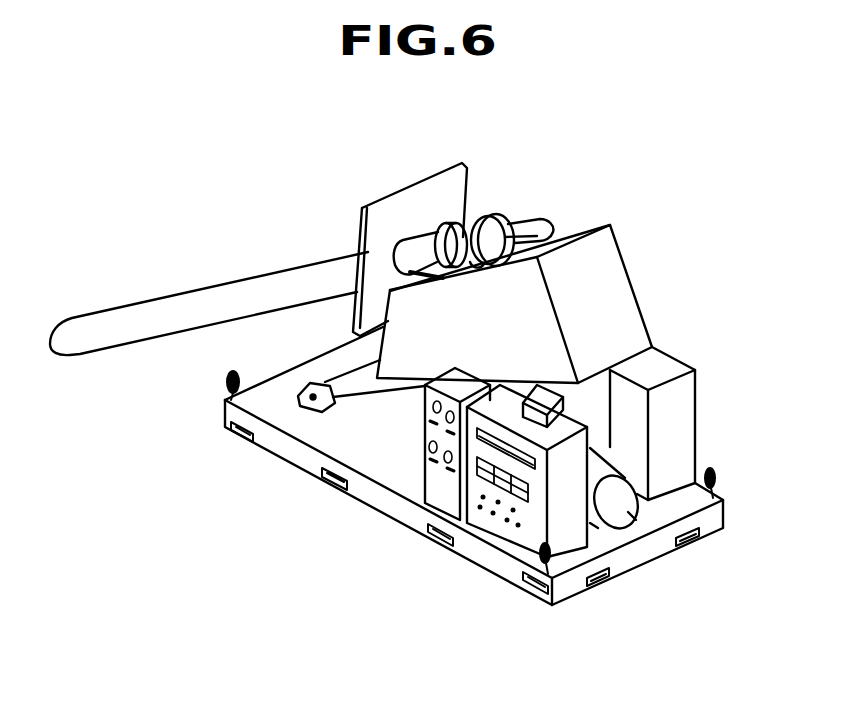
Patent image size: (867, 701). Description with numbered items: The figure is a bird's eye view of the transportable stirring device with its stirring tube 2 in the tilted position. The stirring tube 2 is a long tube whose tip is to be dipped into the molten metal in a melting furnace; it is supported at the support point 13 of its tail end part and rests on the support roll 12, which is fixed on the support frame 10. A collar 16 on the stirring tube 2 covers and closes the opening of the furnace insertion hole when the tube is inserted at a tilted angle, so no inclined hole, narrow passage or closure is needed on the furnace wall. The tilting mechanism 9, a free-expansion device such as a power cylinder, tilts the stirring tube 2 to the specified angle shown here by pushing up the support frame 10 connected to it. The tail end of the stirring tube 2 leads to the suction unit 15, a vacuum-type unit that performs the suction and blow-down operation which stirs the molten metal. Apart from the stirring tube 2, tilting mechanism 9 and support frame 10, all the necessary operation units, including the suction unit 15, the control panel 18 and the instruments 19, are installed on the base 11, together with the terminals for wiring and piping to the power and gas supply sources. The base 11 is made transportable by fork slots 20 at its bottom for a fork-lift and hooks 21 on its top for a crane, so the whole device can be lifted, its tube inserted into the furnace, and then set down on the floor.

The stirring tube 2 is at (138, 301).
The tilting mechanism 9 is at (627, 498).
The support frame 10 is at (617, 272).
The base 11 is at (373, 500).
The support roll 12 is at (463, 232).
The support point 13 is at (484, 250).
The suction unit 15 is at (660, 363).
The collar 16 is at (418, 180).
The control panel 18 is at (503, 531).
The instruments 19 is at (435, 503).
The fork slots 20 is at (322, 484).
The hooks 21 is at (711, 470).